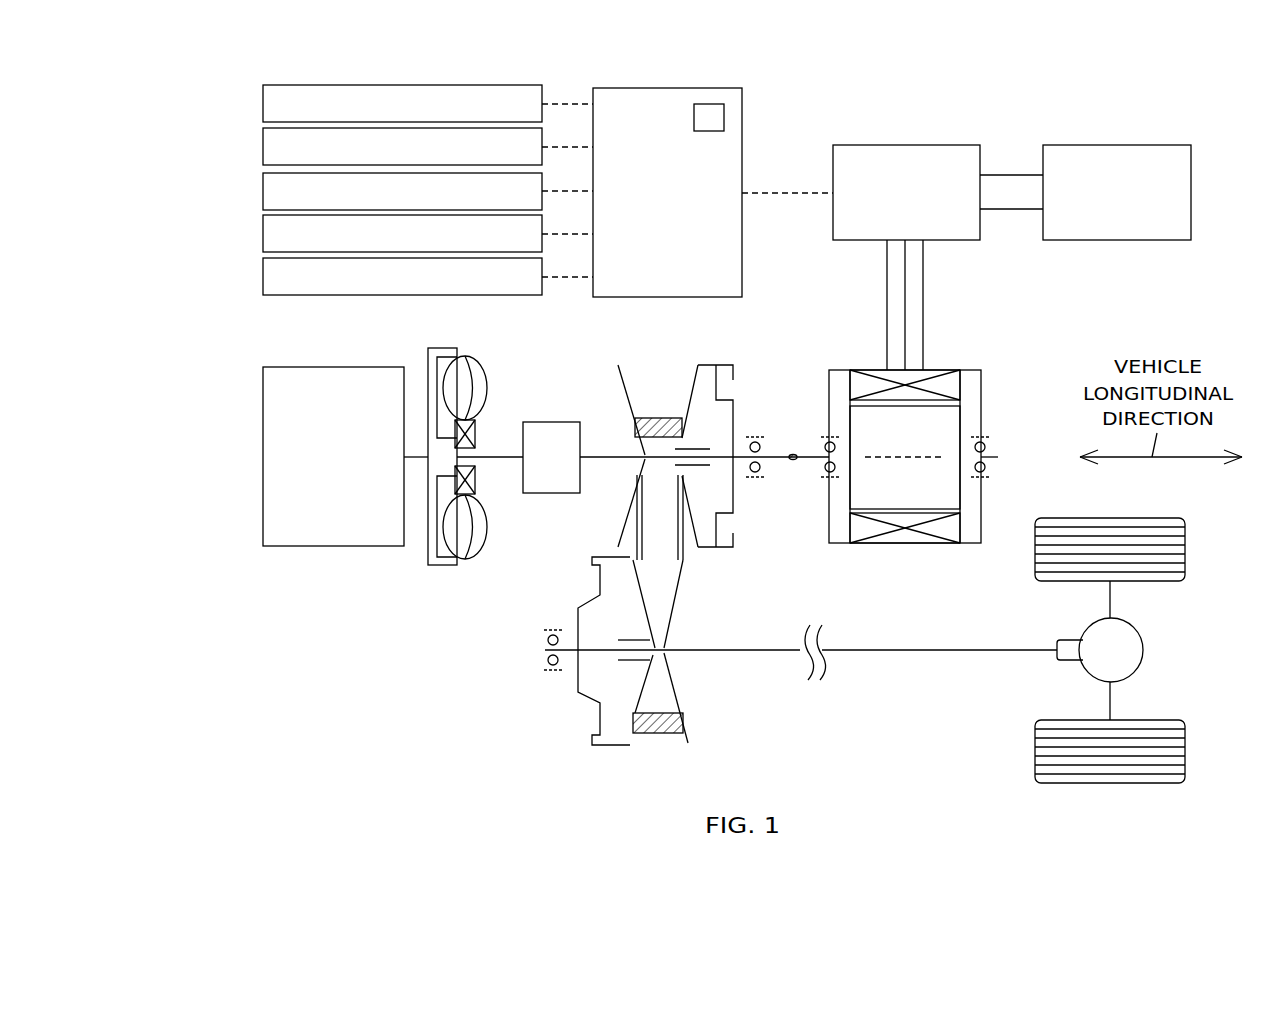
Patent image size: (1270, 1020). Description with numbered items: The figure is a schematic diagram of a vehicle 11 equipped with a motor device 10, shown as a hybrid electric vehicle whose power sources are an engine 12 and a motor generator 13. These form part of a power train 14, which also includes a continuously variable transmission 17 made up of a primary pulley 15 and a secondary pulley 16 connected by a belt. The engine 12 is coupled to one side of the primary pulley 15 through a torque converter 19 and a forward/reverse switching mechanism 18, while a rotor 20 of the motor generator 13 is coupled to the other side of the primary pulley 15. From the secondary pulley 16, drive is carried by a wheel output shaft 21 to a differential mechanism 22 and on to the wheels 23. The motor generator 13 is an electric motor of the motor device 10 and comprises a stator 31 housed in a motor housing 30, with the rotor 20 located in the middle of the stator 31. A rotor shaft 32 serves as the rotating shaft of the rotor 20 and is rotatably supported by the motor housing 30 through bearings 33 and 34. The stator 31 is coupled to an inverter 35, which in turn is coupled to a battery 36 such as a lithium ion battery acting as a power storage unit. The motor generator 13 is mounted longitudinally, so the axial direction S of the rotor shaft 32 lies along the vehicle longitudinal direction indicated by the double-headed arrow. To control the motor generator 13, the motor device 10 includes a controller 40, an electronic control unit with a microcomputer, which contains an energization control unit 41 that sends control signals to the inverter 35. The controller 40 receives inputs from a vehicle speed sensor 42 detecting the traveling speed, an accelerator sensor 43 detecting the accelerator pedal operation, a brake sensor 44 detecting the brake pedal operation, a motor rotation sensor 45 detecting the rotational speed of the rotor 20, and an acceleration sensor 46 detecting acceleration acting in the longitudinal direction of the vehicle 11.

The motor device 10 is at (913, 82).
The vehicle 11 is at (255, 700).
The engine 12 is at (305, 548).
The motor generator 13 is at (820, 434).
The power train 14 is at (237, 383).
The primary pulley 15 is at (722, 522).
The secondary pulley 16 is at (593, 585).
The continuously variable transmission 17 is at (577, 700).
The forward/reverse switching mechanism 18 is at (563, 420).
The torque converter 19 is at (488, 375).
The rotor 20 is at (952, 495).
The wheel output shaft 21 is at (868, 648).
The differential mechanism 22 is at (1145, 652).
The wheels 23 is at (1187, 546).
The motor housing 30 is at (968, 370).
The stator 31 is at (873, 382).
The rotor shaft 32 is at (822, 452).
The bearing 33 is at (987, 468).
The bearing 34 is at (822, 470).
The inverter 35 is at (952, 145).
The battery 36 is at (1163, 145).
The controller 40 is at (631, 88).
The energization control unit 41 is at (712, 104).
The vehicle speed sensor 42 is at (263, 104).
The accelerator sensor 43 is at (263, 147).
The brake sensor 44 is at (263, 191).
The motor rotation sensor 45 is at (263, 233).
The acceleration sensor 46 is at (263, 276).
The axial direction S is at (903, 457).